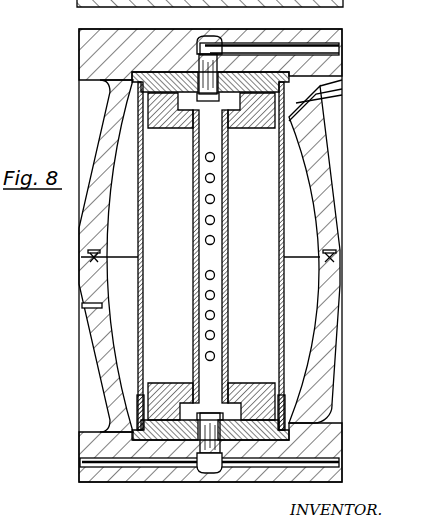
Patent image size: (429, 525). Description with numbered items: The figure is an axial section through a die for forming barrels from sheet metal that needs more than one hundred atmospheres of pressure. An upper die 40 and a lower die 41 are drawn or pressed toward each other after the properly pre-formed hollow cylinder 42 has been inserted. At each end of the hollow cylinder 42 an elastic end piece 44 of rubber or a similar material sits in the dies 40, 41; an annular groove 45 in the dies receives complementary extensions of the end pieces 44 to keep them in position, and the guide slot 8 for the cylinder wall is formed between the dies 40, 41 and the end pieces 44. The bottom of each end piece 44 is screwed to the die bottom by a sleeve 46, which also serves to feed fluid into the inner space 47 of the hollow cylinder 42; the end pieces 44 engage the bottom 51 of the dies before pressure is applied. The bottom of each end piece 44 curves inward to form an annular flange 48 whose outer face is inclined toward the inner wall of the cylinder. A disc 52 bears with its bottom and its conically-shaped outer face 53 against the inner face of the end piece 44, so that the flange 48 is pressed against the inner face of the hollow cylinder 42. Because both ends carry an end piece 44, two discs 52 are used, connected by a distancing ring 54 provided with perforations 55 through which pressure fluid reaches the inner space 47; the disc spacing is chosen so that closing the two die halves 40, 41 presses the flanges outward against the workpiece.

The guide slot 8 is at (289, 93).
The upper die 40 is at (311, 142).
The lower die 41 is at (311, 343).
The hollow cylinder 42 is at (286, 321).
The elastic end piece 44 is at (174, 502).
The annular groove 45 is at (136, 433).
The sleeve 46 is at (222, 442).
The inner space 47 is at (254, 231).
The annular flange 48 is at (284, 395).
The bottom of the dies 51 is at (150, 441).
The disc 52 is at (143, 397).
The conically-shaped outer face 53 is at (289, 407).
The distancing ring 54 is at (224, 281).
The perforations 55 is at (229, 200).